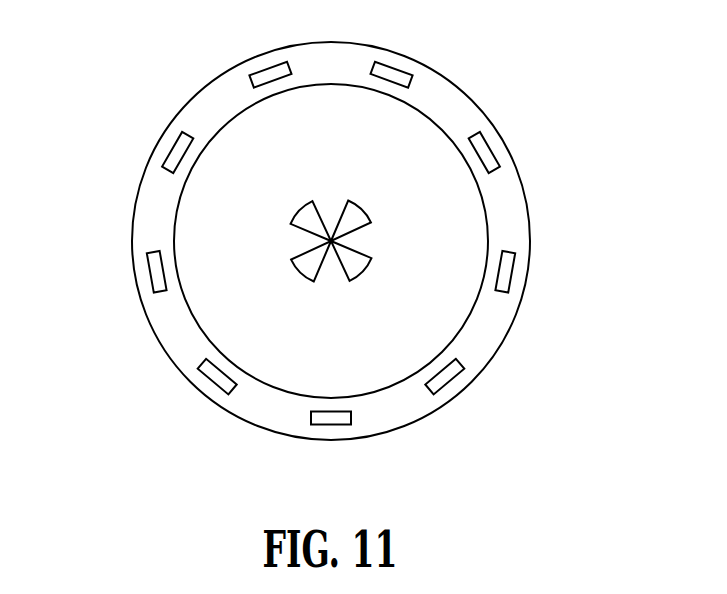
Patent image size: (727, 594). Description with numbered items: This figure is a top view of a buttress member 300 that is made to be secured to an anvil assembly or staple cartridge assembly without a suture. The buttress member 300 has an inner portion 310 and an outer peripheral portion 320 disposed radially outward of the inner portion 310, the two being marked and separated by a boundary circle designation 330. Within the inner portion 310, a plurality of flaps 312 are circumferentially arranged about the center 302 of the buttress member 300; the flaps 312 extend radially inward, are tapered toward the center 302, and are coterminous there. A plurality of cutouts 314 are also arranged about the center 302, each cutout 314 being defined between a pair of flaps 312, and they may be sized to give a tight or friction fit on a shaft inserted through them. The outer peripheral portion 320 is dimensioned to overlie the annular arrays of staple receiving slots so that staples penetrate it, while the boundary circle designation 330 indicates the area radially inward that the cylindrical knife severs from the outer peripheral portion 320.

The buttress member 300 is at (501, 84).
The center 302 is at (331, 241).
The inner portion 310 is at (245, 137).
The flap 312 is at (279, 237).
The cutout 314 is at (303, 268).
The outer peripheral portion 320 is at (482, 337).
The boundary circle designation 330 is at (483, 188).